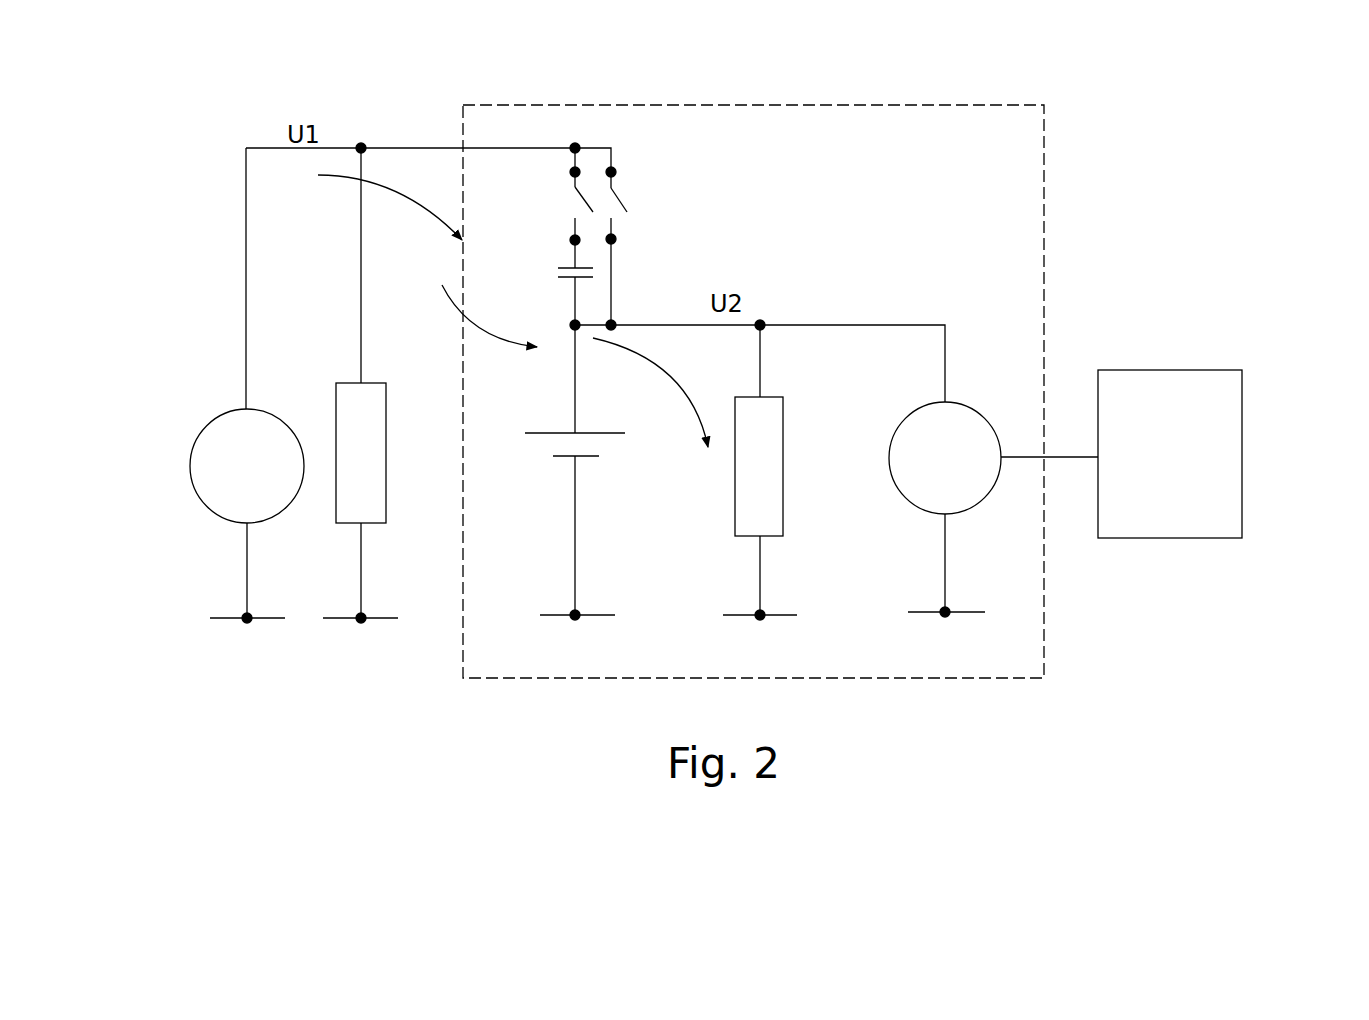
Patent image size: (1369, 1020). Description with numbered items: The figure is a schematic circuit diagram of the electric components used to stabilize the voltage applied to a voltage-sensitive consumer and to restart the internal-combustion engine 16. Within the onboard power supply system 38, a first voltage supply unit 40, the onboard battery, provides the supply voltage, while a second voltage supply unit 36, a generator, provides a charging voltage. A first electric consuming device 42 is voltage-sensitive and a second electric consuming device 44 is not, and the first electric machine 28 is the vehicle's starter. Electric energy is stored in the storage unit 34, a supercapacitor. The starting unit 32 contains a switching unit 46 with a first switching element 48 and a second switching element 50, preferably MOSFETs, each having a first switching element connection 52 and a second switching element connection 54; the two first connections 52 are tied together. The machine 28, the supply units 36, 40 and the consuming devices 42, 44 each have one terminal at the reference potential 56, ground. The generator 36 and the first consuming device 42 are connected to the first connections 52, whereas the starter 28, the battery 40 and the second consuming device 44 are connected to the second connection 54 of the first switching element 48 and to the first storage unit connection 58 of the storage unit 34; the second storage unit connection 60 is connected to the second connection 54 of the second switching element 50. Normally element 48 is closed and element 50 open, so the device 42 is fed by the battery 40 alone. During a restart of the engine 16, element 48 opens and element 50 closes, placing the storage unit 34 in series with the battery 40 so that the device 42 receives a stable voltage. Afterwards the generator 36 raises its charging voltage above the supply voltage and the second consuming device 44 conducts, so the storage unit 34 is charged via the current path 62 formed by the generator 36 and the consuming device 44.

The internal-combustion engine 16 is at (1242, 520).
The first electric machine 28 is at (982, 502).
The starting unit 32 is at (1044, 221).
The storage unit 34 is at (557, 275).
The second voltage supply unit 36 is at (190, 468).
The onboard power supply system 38 is at (852, 290).
The first voltage supply unit 40 is at (588, 458).
The first electric consuming device 42 is at (387, 513).
The second electric consuming device 44 is at (783, 500).
The switching unit 46 is at (678, 190).
The first switching element 48 is at (623, 200).
The second switching element 50 is at (570, 205).
The first switching element connection 52 is at (572, 180).
The second switching element connection 54 is at (578, 228).
The reference potential 56 is at (975, 612).
The first storage unit connection 58 is at (573, 305).
The second storage unit connection 60 is at (575, 257).
The current path 62 is at (410, 192).